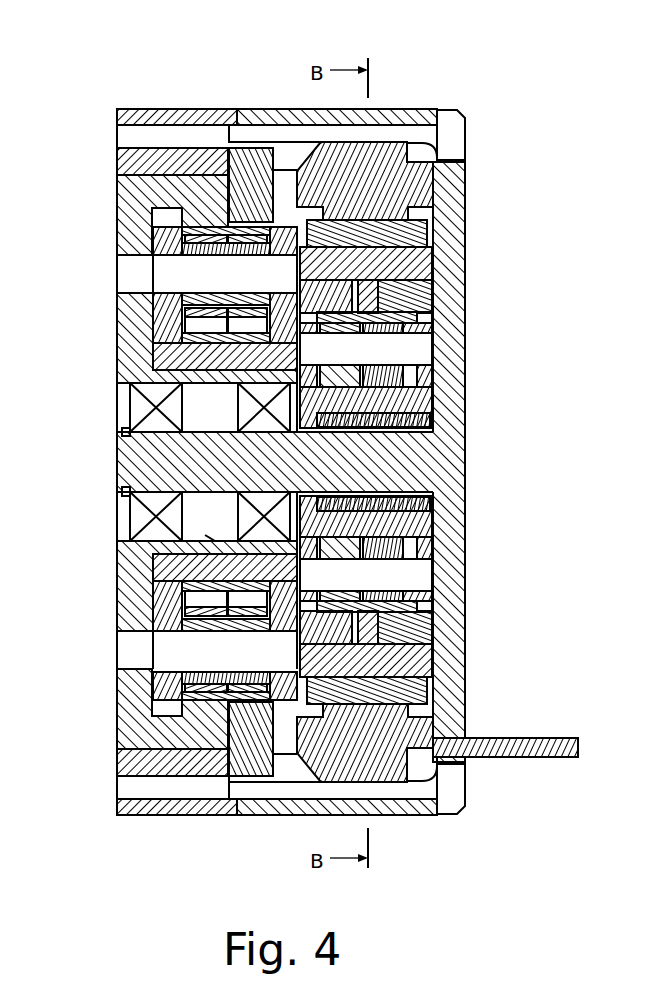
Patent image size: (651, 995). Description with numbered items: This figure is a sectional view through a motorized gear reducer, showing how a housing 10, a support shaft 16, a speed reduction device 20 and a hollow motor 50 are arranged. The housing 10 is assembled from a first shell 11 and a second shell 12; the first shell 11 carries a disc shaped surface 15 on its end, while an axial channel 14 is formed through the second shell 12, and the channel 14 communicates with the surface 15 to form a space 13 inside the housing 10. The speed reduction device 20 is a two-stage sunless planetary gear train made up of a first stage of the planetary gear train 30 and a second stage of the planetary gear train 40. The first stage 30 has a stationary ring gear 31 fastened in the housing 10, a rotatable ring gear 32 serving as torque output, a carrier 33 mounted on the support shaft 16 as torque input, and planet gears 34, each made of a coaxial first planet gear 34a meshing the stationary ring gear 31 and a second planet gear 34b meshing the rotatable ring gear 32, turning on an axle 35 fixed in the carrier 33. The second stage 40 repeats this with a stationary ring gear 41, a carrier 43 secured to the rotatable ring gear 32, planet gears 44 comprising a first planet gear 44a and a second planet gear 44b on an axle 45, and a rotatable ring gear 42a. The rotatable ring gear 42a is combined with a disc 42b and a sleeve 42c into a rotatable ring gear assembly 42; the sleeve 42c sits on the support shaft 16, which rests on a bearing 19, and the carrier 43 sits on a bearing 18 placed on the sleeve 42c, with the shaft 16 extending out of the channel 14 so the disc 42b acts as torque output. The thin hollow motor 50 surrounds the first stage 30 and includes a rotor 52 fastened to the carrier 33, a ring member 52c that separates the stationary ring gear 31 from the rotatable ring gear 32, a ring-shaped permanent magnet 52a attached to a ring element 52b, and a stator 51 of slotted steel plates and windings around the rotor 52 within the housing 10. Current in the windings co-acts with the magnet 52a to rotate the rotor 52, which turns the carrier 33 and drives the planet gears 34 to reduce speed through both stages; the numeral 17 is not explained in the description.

The housing 10 is at (236, 94).
The first shell 11 is at (388, 109).
The second shell 12 is at (158, 109).
The space 13 is at (282, 109).
The axial channel 14 is at (120, 748).
The disc shaped surface 15 is at (468, 195).
The support shaft 16 is at (172, 460).
The rotor core 17 is at (398, 400).
The bearing 18 is at (200, 355).
The bearing 19 is at (140, 405).
The speed reduction device 20 is at (410, 573).
The first stage of the planetary gear train 30 is at (392, 340).
The stationary ring gear 31 is at (405, 622).
The rotatable ring gear 32 is at (393, 707).
The carrier 33 is at (403, 522).
The planet gears 34 is at (555, 665).
The first planet gear 34a is at (407, 632).
The second planet gear 34b is at (397, 690).
The axle 35 is at (428, 552).
The second stage of the planetary gear train 40 is at (150, 693).
The stationary ring gear 41 is at (330, 693).
The rotatable ring gear assembly 42 is at (120, 720).
The rotatable ring gear 42a is at (155, 778).
The disc 42b is at (128, 575).
The sleeve 42c is at (210, 537).
The carrier 43 is at (170, 607).
The planet gears 44 is at (222, 885).
The first planet gear 44a is at (247, 700).
The second planet gear 44b is at (180, 790).
The axle 45 is at (170, 652).
The hollow motor 50 is at (440, 155).
The stator 51 is at (425, 109).
The rotor 52 is at (397, 246).
The permanent magnet 52a is at (390, 221).
The ring element 52b is at (400, 270).
The ring member 52c is at (410, 290).